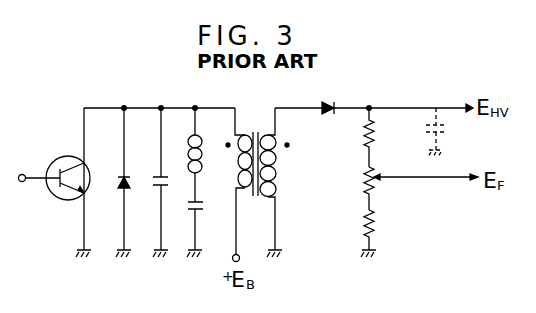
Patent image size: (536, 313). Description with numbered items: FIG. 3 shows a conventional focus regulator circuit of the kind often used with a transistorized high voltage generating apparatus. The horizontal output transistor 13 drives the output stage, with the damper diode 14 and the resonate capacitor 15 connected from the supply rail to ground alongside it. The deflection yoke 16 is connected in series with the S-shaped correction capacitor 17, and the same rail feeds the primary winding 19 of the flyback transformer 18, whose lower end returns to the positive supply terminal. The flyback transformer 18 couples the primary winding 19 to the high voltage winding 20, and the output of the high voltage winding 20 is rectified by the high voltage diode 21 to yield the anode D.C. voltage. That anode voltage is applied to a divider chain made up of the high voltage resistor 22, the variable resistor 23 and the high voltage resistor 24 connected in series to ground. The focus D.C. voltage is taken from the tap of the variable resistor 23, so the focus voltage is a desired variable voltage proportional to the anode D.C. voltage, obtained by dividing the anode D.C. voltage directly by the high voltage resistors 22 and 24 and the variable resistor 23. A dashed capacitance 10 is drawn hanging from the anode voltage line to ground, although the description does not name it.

The load capacitance (dashed) 10 is at (447, 128).
The horizontal output transistor 13 is at (62, 199).
The damper diode 14 is at (127, 176).
The resonate capacitor 15 is at (165, 176).
The deflection yoke 16 is at (199, 137).
The S-shaped correction capacitor 17 is at (188, 205).
The flyback transformer 18 is at (266, 115).
The primary winding 19 is at (237, 180).
The high voltage winding 20 is at (280, 182).
The high voltage diode 21 is at (324, 100).
The high voltage resistor 22 is at (373, 128).
The variable resistor 23 is at (362, 177).
The high voltage resistor 24 is at (376, 223).